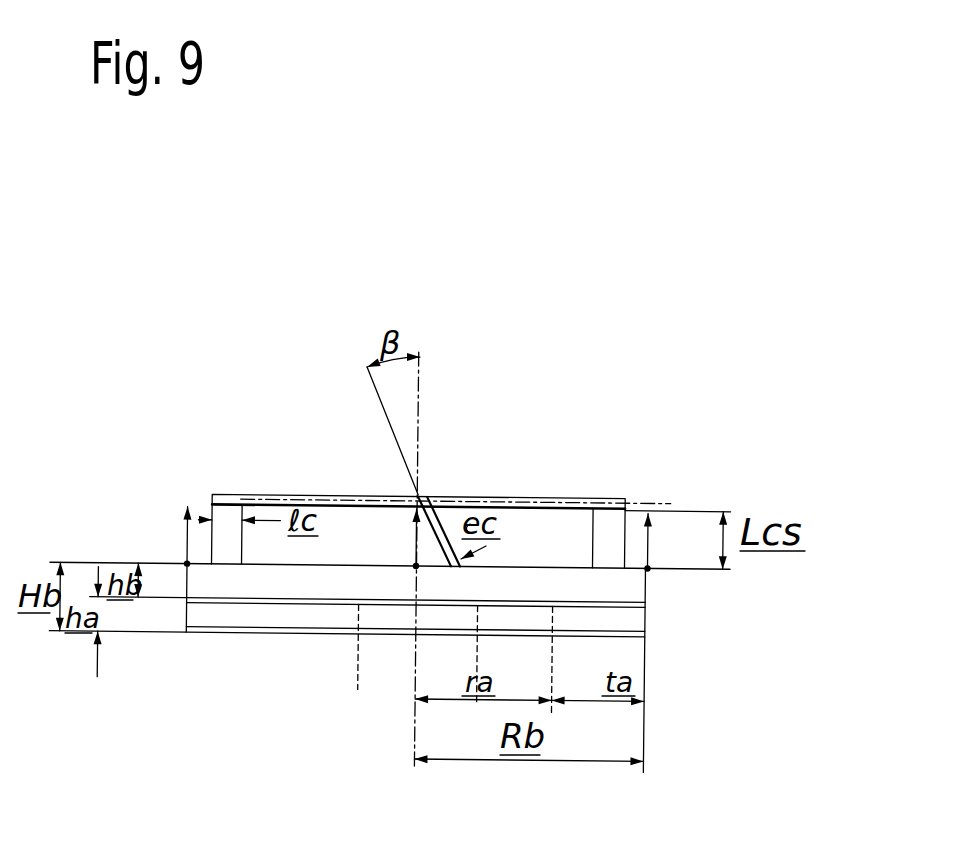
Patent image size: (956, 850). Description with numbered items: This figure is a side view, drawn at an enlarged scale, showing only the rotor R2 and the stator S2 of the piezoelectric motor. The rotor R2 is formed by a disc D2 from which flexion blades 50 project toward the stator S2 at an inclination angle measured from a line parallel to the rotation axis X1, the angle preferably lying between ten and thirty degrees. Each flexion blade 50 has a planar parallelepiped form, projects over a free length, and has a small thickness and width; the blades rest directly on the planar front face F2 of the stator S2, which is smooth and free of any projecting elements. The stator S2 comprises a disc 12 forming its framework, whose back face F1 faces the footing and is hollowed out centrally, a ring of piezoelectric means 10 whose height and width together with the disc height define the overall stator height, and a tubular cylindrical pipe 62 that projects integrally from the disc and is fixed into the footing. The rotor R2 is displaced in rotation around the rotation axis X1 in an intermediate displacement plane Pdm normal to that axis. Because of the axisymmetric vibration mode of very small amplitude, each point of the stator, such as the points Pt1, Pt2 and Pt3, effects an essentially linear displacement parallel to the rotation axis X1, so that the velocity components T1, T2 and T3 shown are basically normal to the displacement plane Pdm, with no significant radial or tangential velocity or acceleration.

The piezoelectric means 10 is at (656, 631).
The disc 12 is at (601, 583).
The flexion blade 50 is at (450, 508).
The tubular cylindrical pipe 62 is at (389, 675).
The rotation axis X1 is at (426, 380).
The disc D2 is at (523, 500).
The rotor R2 is at (597, 378).
The intermediate displacement plane Pdm is at (658, 497).
The back face F1 is at (235, 649).
The front face F2 is at (200, 494).
The stator S2 is at (739, 601).
The velocity component T1 is at (397, 534).
The velocity component T2 is at (170, 534).
The velocity component T3 is at (672, 537).
The stator point Pt1 is at (414, 570).
The stator point Pt2 is at (190, 568).
The stator point Pt3 is at (650, 571).